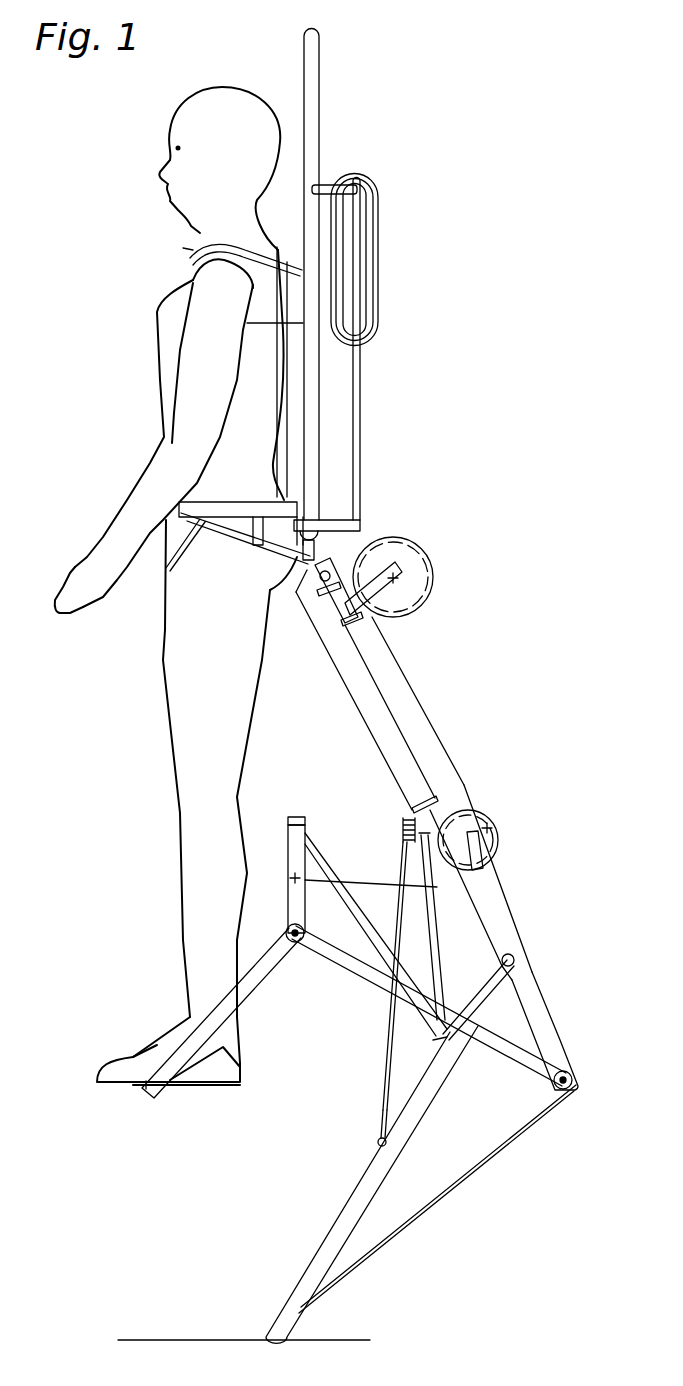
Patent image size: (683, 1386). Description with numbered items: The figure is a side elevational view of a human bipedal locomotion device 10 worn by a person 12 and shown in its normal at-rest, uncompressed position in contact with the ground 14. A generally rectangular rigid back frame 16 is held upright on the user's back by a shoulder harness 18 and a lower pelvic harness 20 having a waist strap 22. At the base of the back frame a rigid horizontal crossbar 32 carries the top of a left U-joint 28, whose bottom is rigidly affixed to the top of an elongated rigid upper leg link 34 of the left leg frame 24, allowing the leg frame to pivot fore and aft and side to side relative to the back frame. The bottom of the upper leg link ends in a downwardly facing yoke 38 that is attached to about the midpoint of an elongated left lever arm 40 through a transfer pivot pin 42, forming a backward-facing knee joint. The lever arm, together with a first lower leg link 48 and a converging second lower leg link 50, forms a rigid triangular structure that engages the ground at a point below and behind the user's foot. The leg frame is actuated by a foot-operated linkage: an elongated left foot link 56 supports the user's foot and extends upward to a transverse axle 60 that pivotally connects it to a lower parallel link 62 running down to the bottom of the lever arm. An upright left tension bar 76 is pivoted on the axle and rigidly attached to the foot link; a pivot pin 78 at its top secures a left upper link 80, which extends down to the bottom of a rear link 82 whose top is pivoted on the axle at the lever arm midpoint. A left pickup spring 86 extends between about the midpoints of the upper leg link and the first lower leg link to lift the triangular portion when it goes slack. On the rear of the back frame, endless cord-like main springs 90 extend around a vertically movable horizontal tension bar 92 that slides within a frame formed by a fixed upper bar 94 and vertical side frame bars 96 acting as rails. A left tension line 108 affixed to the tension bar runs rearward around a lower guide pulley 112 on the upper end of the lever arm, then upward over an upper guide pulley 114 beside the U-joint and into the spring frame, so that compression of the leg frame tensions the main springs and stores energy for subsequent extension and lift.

The human bipedal device 10 is at (374, 909).
The person 12 is at (187, 250).
The ground 14 is at (162, 1338).
The back frame 16 is at (323, 137).
The shoulder harness 18 is at (193, 228).
The lower pelvic harness 20 is at (173, 568).
The waist strap 22 is at (228, 506).
The left leg frame 24 is at (509, 937).
The left U-joint 28 is at (332, 564).
The crossbar 32 is at (316, 531).
The upper leg link 34 is at (367, 697).
The yoke 38 is at (470, 886).
The left lever arm 40 is at (553, 1037).
The transfer pivot pin 42 is at (516, 960).
The first lower leg link 48 is at (328, 1243).
The second lower leg link 50 is at (486, 1163).
The left foot link 56 is at (244, 993).
The transverse axle 60 is at (303, 928).
The lower parallel link 62 is at (380, 993).
The left tension bar 76 is at (306, 845).
The pivot pin 78 is at (298, 818).
The left upper link 80 is at (366, 942).
The rear link 82 is at (480, 998).
The left pickup spring 86 is at (385, 1097).
The main spring 90 is at (383, 272).
The tension bar 92 is at (372, 333).
The upper bar 94 is at (368, 191).
The vertical side frame bar 96 is at (364, 416).
The left tension line 108 is at (441, 736).
The lower guide pulley 112 is at (490, 832).
The upper guide pulley 114 is at (403, 578).